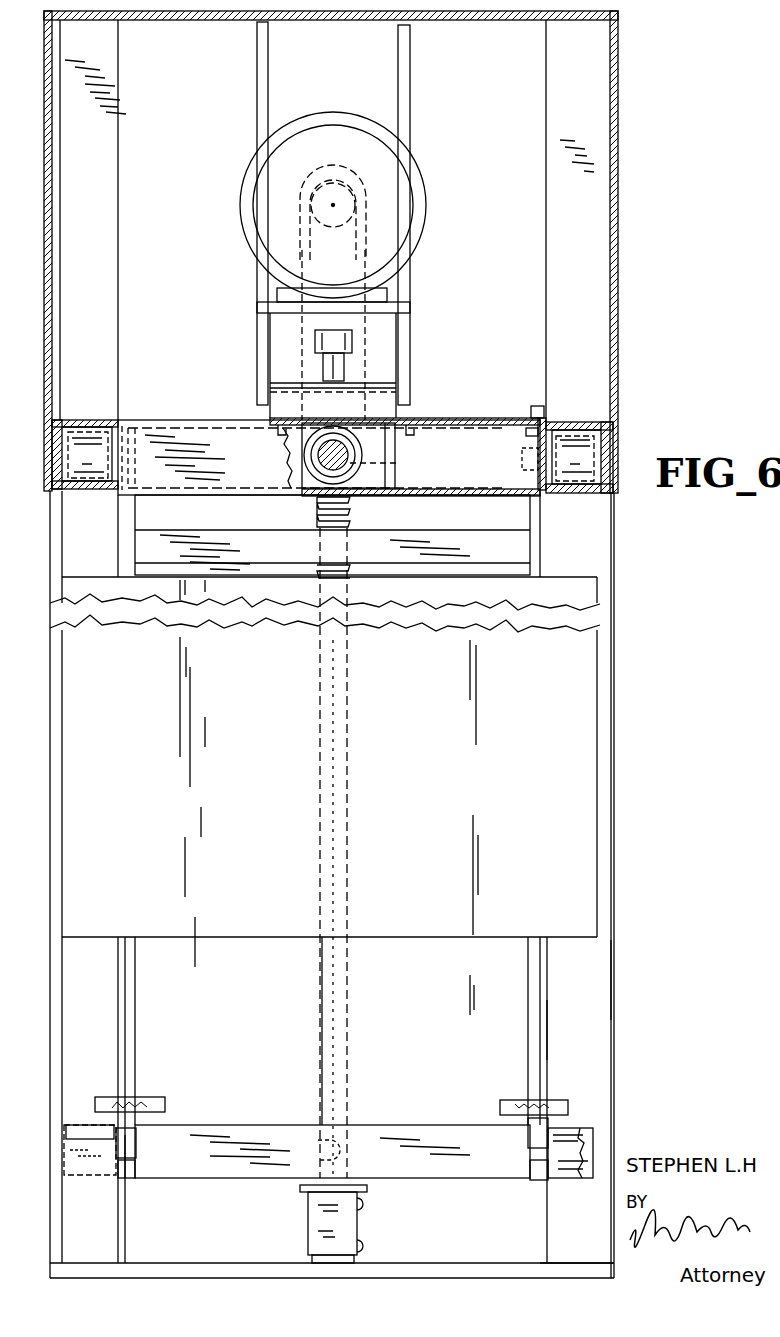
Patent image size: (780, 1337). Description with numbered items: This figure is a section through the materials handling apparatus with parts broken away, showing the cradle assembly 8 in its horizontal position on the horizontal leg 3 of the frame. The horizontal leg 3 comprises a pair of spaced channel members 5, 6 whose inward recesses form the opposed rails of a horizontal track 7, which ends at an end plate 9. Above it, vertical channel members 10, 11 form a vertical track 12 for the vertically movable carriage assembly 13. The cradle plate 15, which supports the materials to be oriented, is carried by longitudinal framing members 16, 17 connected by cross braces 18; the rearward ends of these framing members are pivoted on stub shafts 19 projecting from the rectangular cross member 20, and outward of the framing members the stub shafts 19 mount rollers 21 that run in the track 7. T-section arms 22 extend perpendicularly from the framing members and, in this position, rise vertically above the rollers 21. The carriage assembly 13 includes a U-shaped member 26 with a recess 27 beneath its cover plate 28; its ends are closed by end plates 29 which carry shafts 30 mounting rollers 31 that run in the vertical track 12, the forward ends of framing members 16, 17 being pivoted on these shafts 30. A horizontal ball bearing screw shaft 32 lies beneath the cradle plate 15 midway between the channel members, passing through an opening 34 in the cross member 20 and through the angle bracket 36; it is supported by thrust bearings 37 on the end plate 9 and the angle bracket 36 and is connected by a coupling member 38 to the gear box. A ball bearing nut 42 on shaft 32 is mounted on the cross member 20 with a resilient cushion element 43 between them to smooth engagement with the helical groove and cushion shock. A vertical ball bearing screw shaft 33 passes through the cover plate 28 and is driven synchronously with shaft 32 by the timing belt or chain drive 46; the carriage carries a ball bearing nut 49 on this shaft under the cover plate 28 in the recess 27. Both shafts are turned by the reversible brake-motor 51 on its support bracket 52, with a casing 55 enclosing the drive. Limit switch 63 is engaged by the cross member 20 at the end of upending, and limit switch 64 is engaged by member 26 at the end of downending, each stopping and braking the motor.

The horizontal leg 3 is at (625, 980).
The channel member 5 is at (72, 1236).
The channel member 6 is at (560, 1228).
The horizontal track 7 is at (100, 1071).
The cradle assembly 8 is at (557, 1038).
The end plate 9 is at (520, 1268).
The channel member 10 is at (100, 420).
The channel member 11 is at (575, 425).
The vertical track 12 is at (80, 470).
The carriage assembly 13 is at (467, 416).
The cradle plate 15 is at (290, 933).
The framing member 16 is at (130, 972).
The framing member 17 is at (527, 963).
The cross braces 18 is at (452, 540).
The stub shafts 19 is at (125, 1165).
The cross member 20 is at (395, 1128).
The rollers 21 is at (72, 1132).
The T-section arms 22 is at (130, 1136).
The U-shaped member 26 is at (258, 480).
The recess 27 is at (462, 488).
The cover plate 28 is at (215, 440).
The end plates 29 is at (122, 430).
The shafts 30 is at (524, 468).
The rollers 31 is at (70, 441).
The horizontal ball bearing screw shaft 32 is at (322, 622).
The vertical ball bearing screw shaft 33 is at (355, 470).
The opening 34 is at (318, 1148).
The angle bracket 36 is at (386, 400).
The thrust bearings 37 is at (350, 1264).
The coupling member 38 is at (352, 341).
The ball bearing nut 42 is at (318, 1226).
The resilient cushion element 43 is at (305, 1188).
The timing belt or chain drive 46 is at (303, 358).
The ball bearing nut 49 is at (356, 498).
The reversible brake-motor 51 is at (400, 205).
The support bracket 52 is at (262, 307).
The casing 55 is at (615, 107).
The limit switch 63 is at (416, 433).
The limit switch 64 is at (541, 410).